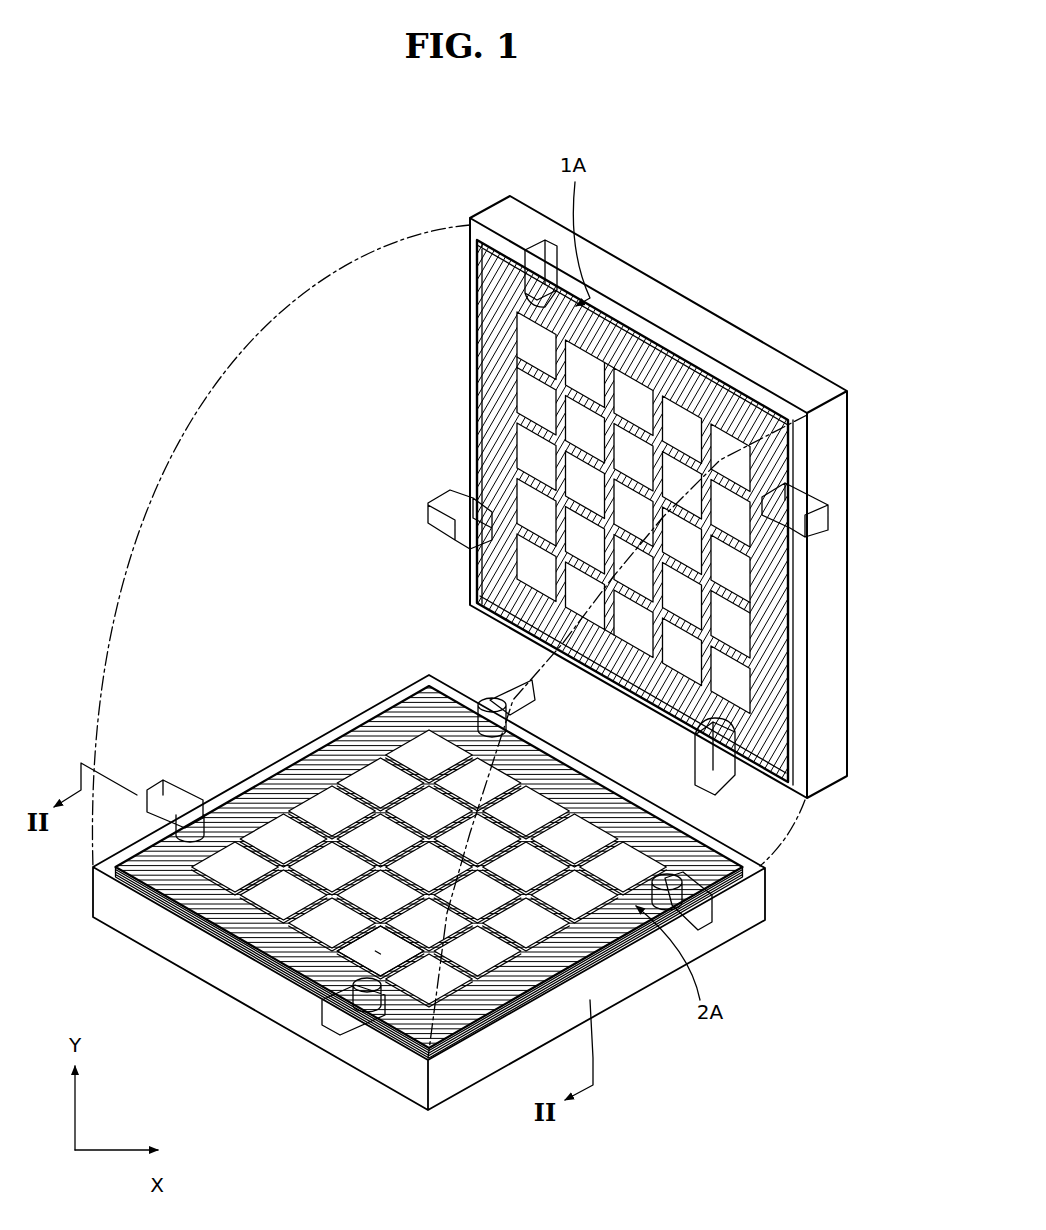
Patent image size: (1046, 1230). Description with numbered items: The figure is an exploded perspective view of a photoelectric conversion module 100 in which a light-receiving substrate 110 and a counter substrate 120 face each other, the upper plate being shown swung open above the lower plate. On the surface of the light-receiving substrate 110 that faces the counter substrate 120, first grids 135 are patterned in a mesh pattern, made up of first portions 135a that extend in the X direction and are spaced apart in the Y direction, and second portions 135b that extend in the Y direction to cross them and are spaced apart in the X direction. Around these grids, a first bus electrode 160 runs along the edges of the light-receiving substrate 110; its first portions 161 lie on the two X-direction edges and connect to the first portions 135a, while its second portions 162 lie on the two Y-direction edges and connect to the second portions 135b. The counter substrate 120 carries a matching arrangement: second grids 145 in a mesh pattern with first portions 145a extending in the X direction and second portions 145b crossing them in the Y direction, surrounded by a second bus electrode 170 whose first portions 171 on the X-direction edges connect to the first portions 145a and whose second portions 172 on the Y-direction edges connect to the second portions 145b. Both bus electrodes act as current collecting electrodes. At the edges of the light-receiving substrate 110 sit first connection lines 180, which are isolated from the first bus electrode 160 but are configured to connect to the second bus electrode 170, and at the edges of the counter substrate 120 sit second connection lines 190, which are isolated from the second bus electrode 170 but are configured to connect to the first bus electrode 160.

The photoelectric conversion module 100 is at (235, 180).
The light-receiving substrate 110 is at (830, 565).
The counter substrate 120 is at (590, 1000).
The first grids 135 is at (612, 186).
The first portions of the first grids 135a is at (632, 420).
The second portions of the first grids 135b is at (610, 380).
The second grids 145 is at (152, 1020).
The first portions of the second grids 145a is at (340, 940).
The second portions of the second grids 145b is at (375, 960).
The first bus electrode 160 is at (465, 286).
The first portions of the first bus electrode 161 is at (485, 345).
The second portions of the first bus electrode 162 is at (710, 392).
The second bus electrode 170 is at (318, 740).
The first portions of the second bus electrode 171 is at (280, 790).
The second portions of the second bus electrode 172 is at (597, 792).
The first connection lines 180 is at (527, 240).
The second connection lines 190 is at (500, 688).